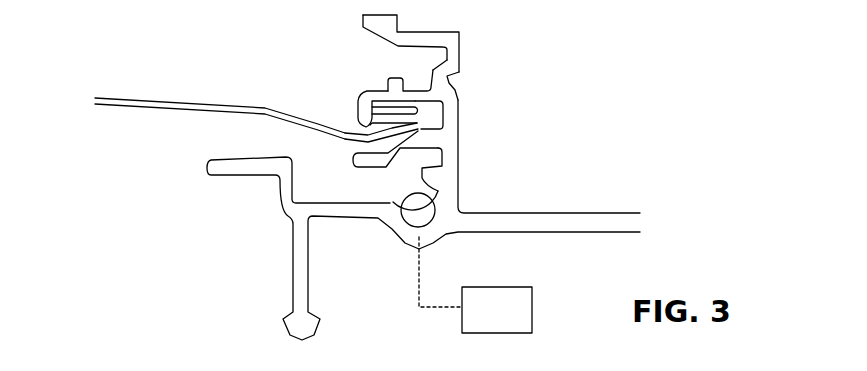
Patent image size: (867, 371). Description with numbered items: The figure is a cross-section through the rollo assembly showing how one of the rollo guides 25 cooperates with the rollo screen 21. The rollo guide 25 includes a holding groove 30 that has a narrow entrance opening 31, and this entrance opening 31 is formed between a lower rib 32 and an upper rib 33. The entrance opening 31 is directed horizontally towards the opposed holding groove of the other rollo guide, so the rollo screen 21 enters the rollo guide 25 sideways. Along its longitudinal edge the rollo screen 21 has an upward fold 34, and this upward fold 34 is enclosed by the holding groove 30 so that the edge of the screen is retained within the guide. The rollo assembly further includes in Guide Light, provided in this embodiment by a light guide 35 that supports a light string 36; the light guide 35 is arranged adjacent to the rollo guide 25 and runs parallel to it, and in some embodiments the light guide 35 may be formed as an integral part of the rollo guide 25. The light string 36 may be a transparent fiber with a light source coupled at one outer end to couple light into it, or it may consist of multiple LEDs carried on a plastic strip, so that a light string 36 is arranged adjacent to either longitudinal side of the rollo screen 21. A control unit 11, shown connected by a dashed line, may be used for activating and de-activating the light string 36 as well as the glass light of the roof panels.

The control unit 11 is at (509, 319).
The rollo screen 21 is at (218, 100).
The rollo guide 25 is at (519, 66).
The holding groove 30 is at (443, 118).
The entrance opening 31 is at (345, 126).
The lower rib 32 is at (354, 160).
The upper rib 33 is at (362, 117).
The upward fold 34 is at (458, 100).
The light guide 35 is at (438, 191).
The light string 36 is at (424, 214).